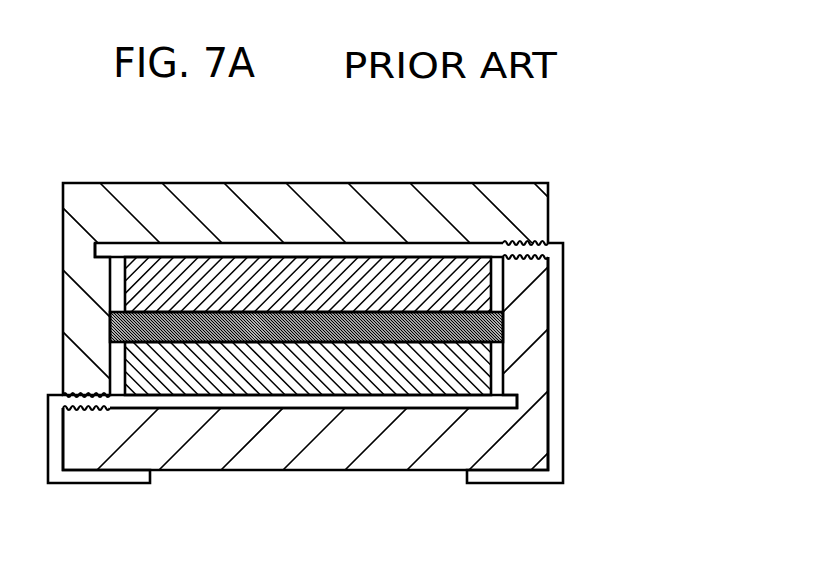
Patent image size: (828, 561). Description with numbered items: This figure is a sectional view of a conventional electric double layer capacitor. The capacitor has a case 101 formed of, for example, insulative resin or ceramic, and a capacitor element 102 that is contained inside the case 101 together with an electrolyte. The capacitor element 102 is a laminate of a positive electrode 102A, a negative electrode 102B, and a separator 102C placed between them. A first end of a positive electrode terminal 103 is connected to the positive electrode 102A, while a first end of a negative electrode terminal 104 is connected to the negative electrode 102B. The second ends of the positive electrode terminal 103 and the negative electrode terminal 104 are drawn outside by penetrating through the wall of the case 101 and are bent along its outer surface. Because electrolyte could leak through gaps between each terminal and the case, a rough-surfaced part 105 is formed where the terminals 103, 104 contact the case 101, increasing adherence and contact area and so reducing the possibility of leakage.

The case 101 is at (138, 195).
The capacitor element 102 is at (402, 314).
The positive electrode 102A is at (477, 372).
The negative electrode 102B is at (478, 285).
The separator 102C is at (477, 327).
The positive electrode terminal 103 is at (310, 405).
The negative electrode terminal 104 is at (300, 250).
The rough-surfaced part 105 is at (517, 242).